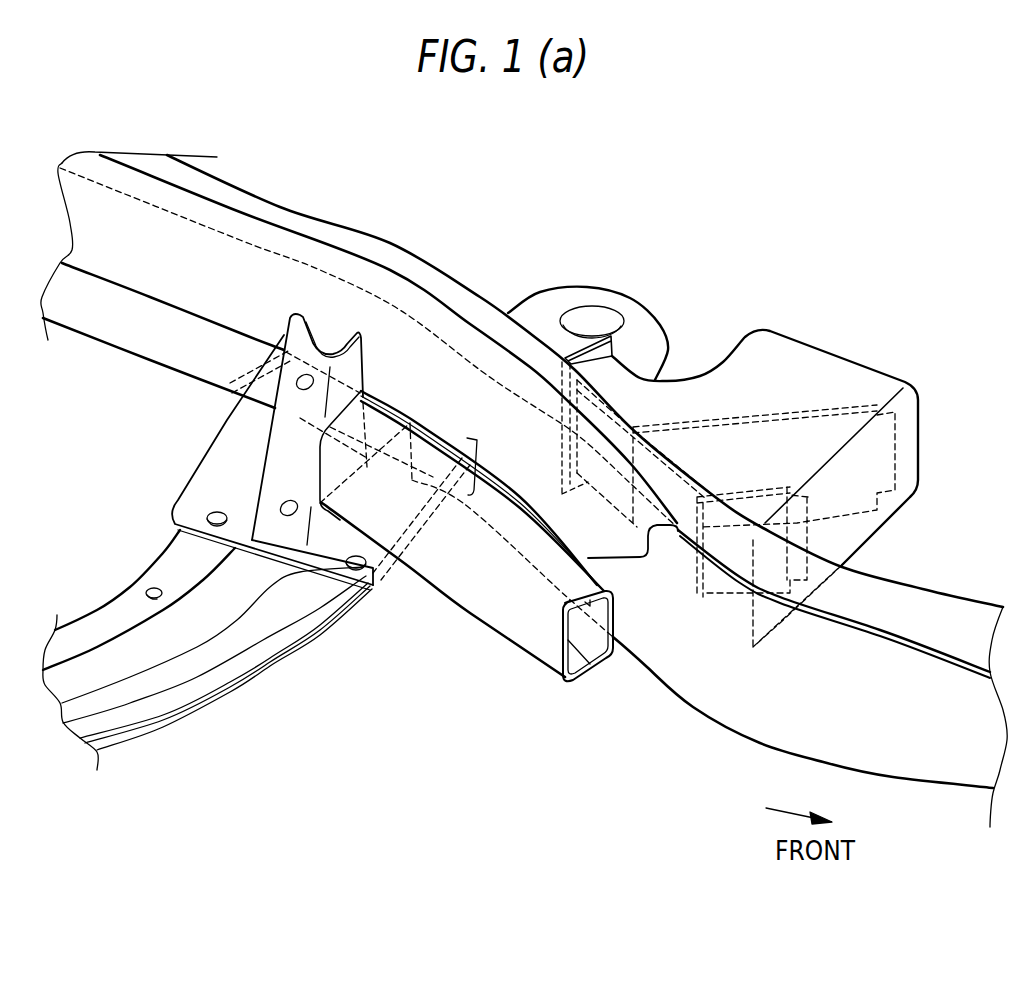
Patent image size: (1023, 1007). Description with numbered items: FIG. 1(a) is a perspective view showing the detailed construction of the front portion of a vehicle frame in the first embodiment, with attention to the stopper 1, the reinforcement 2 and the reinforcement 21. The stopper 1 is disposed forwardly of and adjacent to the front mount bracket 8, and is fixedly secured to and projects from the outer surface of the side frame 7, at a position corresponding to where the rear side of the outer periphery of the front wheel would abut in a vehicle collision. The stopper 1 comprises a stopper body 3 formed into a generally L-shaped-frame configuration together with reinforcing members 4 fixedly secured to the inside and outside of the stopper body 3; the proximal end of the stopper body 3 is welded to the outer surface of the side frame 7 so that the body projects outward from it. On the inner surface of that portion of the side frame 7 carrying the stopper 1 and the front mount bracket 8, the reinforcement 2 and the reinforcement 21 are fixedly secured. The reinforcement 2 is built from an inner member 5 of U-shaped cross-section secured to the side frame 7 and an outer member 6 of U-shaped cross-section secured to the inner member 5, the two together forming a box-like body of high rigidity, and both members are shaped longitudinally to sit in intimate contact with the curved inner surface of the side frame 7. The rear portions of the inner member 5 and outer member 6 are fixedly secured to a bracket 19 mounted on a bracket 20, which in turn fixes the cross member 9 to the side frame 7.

The stopper 1 is at (737, 454).
The reinforcement 2 is at (476, 604).
The stopper body 3 is at (732, 376).
The reinforcing members 4 is at (773, 442).
The inner member 5 is at (630, 640).
The outer member 6 is at (557, 644).
The side frame 7 is at (348, 244).
The front mount bracket 8 is at (633, 310).
The cross member 9 is at (232, 630).
The bracket 19 is at (282, 455).
The bracket 20 is at (198, 480).
The reinforcement 21 is at (630, 545).